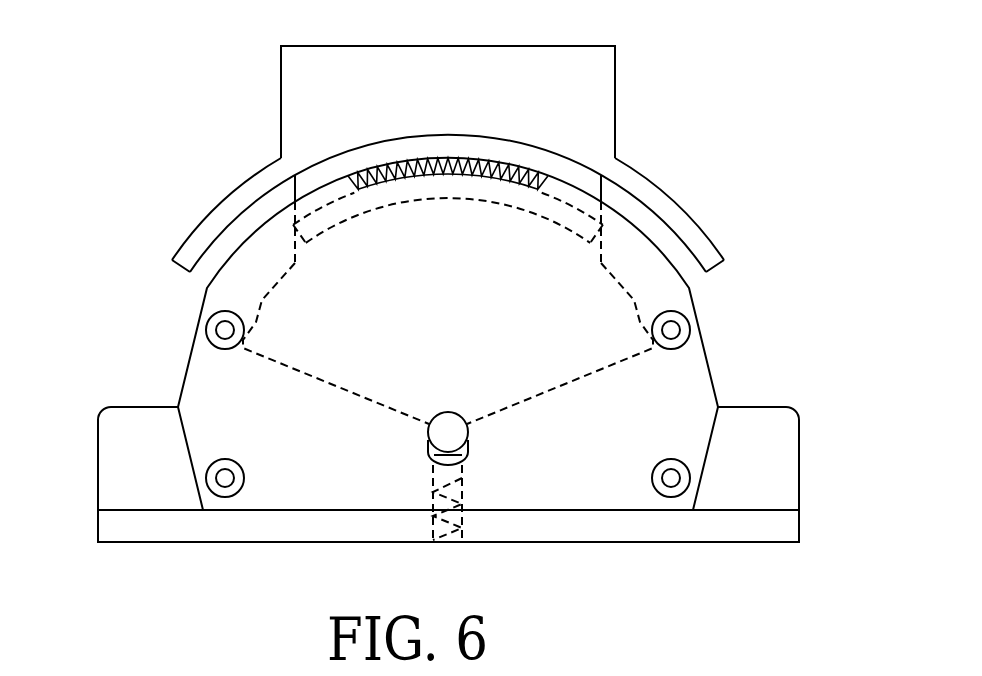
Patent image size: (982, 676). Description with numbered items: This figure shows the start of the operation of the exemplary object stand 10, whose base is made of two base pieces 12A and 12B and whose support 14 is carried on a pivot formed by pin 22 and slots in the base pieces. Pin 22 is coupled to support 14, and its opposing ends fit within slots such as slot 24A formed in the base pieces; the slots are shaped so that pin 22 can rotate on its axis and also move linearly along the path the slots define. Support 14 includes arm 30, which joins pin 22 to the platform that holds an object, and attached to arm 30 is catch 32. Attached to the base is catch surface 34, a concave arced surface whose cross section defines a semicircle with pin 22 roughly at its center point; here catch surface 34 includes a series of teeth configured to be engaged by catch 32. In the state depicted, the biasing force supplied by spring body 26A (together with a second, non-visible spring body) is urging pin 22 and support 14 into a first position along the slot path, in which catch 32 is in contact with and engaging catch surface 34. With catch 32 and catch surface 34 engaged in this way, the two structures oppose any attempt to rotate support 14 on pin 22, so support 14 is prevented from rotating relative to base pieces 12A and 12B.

The stand 10 is at (102, 162).
The base piece 12A is at (698, 377).
The base piece 12B is at (780, 468).
The support 14 is at (598, 88).
The pin 22 is at (443, 422).
The slot 24A is at (468, 442).
The spring body 26A is at (432, 488).
The arm 30 is at (328, 380).
The catch 32 is at (447, 177).
The catch surface 34 is at (482, 157).